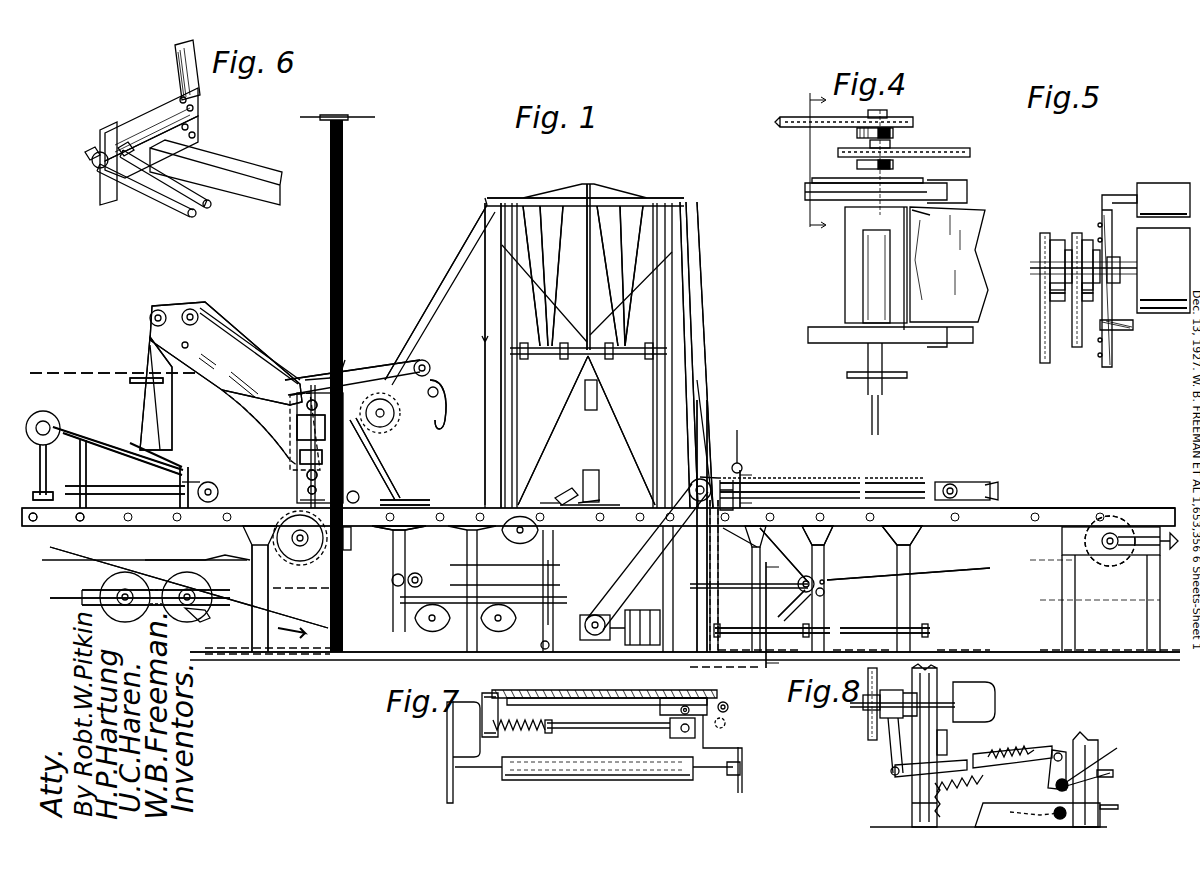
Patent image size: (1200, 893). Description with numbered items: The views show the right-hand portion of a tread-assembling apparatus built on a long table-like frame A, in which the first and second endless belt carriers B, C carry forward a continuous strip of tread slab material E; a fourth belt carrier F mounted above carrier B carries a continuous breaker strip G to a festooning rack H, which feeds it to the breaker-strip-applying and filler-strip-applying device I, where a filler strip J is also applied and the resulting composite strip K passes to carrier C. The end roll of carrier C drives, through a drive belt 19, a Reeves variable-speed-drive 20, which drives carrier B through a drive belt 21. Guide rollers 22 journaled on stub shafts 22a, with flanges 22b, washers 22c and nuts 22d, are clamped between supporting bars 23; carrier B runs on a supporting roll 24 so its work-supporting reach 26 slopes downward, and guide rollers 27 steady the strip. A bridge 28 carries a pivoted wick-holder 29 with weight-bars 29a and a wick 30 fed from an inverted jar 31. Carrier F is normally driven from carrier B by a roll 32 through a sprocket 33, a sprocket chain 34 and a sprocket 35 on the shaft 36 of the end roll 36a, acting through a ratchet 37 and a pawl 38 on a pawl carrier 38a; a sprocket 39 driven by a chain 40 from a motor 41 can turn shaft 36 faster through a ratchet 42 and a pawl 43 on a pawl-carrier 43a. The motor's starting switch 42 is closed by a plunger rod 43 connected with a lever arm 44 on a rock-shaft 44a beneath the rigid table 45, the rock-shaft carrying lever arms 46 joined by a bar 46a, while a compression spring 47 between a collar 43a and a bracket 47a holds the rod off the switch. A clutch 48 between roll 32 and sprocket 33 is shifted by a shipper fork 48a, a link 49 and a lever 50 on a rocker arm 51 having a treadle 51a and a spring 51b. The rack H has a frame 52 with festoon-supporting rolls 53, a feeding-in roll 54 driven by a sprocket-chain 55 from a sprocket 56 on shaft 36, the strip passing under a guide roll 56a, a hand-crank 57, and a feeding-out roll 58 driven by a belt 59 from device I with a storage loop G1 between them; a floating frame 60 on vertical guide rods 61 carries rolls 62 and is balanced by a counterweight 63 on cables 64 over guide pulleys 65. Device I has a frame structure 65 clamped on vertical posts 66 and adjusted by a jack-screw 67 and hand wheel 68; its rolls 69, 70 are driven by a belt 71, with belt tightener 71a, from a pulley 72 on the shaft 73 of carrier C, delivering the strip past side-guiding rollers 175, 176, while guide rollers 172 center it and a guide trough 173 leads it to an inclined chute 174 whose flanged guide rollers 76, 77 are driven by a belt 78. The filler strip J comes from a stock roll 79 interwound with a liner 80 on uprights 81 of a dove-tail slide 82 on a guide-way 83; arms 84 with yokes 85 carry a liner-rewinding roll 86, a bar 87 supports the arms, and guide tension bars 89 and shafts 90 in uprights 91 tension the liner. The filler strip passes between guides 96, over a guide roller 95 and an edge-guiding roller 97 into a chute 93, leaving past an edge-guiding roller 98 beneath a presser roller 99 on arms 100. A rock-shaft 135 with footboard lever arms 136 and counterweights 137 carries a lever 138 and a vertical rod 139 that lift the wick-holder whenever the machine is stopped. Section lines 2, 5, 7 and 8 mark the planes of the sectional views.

In FIG. 1, the section line 2 is at (194, 380).
In FIG. 4, the section line 5 is at (812, 158).
In FIG. 1, the section line 7 is at (742, 482).
In FIG. 1, the section line 8 is at (761, 623).
In FIG. 1, the drive belt 19 is at (52, 600).
In FIG. 1, the Reeves variable-speed-drive 20 is at (205, 618).
In FIG. 1, the drive belt 21 is at (298, 594).
In FIG. 1, the guide rollers 22 is at (420, 498).
In FIG. 6, the guide rollers 22 is at (165, 207).
In FIG. 6, the stub shafts 22a is at (210, 208).
In FIG. 6, the flanges 22b is at (133, 146).
In FIG. 6, the washers 22c is at (96, 167).
In FIG. 6, the nuts 22d is at (88, 158).
In FIG. 6, the supporting bars 23 is at (198, 123).
In FIG. 1, the supporting roll 24 is at (520, 552).
In FIG. 1, the work-supporting reach 26 is at (440, 600).
In FIG. 1, the guide rollers 27 is at (418, 577).
In FIG. 1, the bridge 28 is at (598, 503).
In FIG. 1, the wick-holder 29 is at (592, 498).
In FIG. 1, the weight-bars 29a is at (562, 490).
In FIG. 1, the wick 30 is at (548, 500).
In FIG. 1, the inverted jar 31 is at (590, 470).
In FIG. 1, the roll 32 is at (800, 598).
In FIG. 8, the roll 32 is at (982, 697).
In FIG. 1, the sprocket 33 is at (800, 577).
In FIG. 8, the sprocket 33 is at (867, 712).
In FIG. 1, the sprocket chain 34 is at (803, 560).
In FIG. 4, the sprocket chain 34 is at (965, 150).
In FIG. 5, the sprocket chain 34 is at (1075, 348).
In FIG. 8, the sprocket chain 34 is at (868, 690).
In FIG. 4, the sprocket 35 is at (905, 157).
In FIG. 5, the sprocket 35 is at (1087, 300).
In FIG. 1, the shaft 36 is at (718, 478).
In FIG. 4, the shaft 36 is at (845, 196).
In FIG. 5, the shaft 36 is at (1126, 285).
In FIG. 4, the end roll 36a is at (908, 330).
In FIG. 5, the end roll 36a is at (1165, 315).
In FIG. 4, the ratchet 37 is at (892, 165).
In FIG. 5, the ratchet 37 is at (1088, 293).
In FIG. 4, the pawl 38 is at (858, 165).
In FIG. 5, the pawl 38 is at (1087, 240).
In FIG. 5, the pawl carrier 38a is at (1097, 250).
In FIG. 4, the sprocket 39 is at (888, 113).
In FIG. 5, the sprocket 39 is at (1055, 300).
In FIG. 1, the chain 40 is at (705, 548).
In FIG. 4, the chain 40 is at (792, 118).
In FIG. 5, the chain 40 is at (1040, 355).
In FIG. 1, the motor 41 is at (647, 632).
In FIG. 1, the ratchet / starting switch 42 is at (765, 492).
In FIG. 4, the ratchet / starting switch 42 is at (890, 133).
In FIG. 5, the ratchet / starting switch 42 is at (1058, 293).
In FIG. 7, the ratchet / starting switch 42 is at (460, 728).
In FIG. 4, the pawl / plunger rod 43 is at (858, 133).
In FIG. 5, the pawl / plunger rod 43 is at (1057, 240).
In FIG. 7, the pawl / plunger rod 43 is at (600, 724).
In FIG. 5, the pawl-carrier / collar 43a is at (1068, 250).
In FIG. 7, the pawl-carrier / collar 43a is at (552, 733).
In FIG. 7, the lever arm 44 is at (695, 730).
In FIG. 7, the rock-shaft 44a is at (678, 738).
In FIG. 1, the rigid table 45 is at (930, 482).
In FIG. 4, the rigid table 45 is at (920, 278).
In FIG. 7, the rigid table 45 is at (650, 704).
In FIG. 1, the lever arms 46 is at (905, 483).
In FIG. 7, the lever arms 46 is at (730, 707).
In FIG. 1, the bar 46a is at (872, 483).
In FIG. 7, the bar 46a is at (727, 724).
In FIG. 7, the compression spring 47 is at (527, 722).
In FIG. 7, the bracket 47a is at (490, 695).
In FIG. 8, the clutch 48 is at (888, 720).
In FIG. 1, the shipper fork 48a is at (832, 546).
In FIG. 8, the shipper fork 48a is at (890, 770).
In FIG. 8, the link 49 is at (980, 760).
In FIG. 8, the lever 50 is at (1050, 772).
In FIG. 1, the rocker arm 51 is at (878, 616).
In FIG. 8, the rocker arm 51 is at (1105, 758).
In FIG. 1, the treadle 51a is at (748, 628).
In FIG. 8, the treadle 51a is at (1112, 777).
In FIG. 8, the spring 51b is at (1012, 748).
In FIG. 1, the frame 52 is at (498, 455).
In FIG. 1, the festoon-supporting rolls 53 is at (680, 198).
In FIG. 1, the feeding-in roll 54 is at (690, 198).
In FIG. 1, the sprocket-chain 55 is at (712, 386).
In FIG. 1, the sprocket 56 is at (688, 484).
In FIG. 4, the sprocket 56 is at (858, 380).
In FIG. 1, the guide roll 56a is at (745, 452).
In FIG. 4, the guide roll 56a is at (875, 253).
In FIG. 5, the guide roll 56a is at (1160, 195).
In FIG. 1, the hand-crank 57 is at (722, 560).
In FIG. 4, the hand-crank 57 is at (884, 395).
In FIG. 1, the feeding-out roll 58 is at (487, 199).
In FIG. 1, the belt 59 is at (443, 280).
In FIG. 1, the floating frame 60 is at (604, 395).
In FIG. 1, the vertical guide rods 61 is at (665, 422).
In FIG. 1, the rolls 62 is at (586, 364).
In FIG. 1, the counterweight 63 is at (588, 410).
In FIG. 1, the cables 64 is at (640, 206).
In FIG. 1, the guide pulleys / frame structure 65 is at (288, 378).
In FIG. 1, the vertical posts 66 is at (344, 225).
In FIG. 1, the jack-screw 67 is at (300, 470).
In FIG. 1, the hand wheel 68 is at (303, 484).
In FIG. 1, the stock-supporting and driving roll 69 is at (395, 410).
In FIG. 1, the stock-supporting and driving roll 70 is at (292, 422).
In FIG. 1, the belt 71 is at (405, 460).
In FIG. 1, the belt tightener 71a is at (388, 530).
In FIG. 1, the pulley 72 is at (347, 548).
In FIG. 1, the shaft 73 is at (297, 550).
In FIG. 1, the flanged guide roller 76 is at (422, 360).
In FIG. 1, the flanged guide rollers 77 is at (445, 390).
In FIG. 1, the belt 78 is at (438, 392).
In FIG. 1, the stock roll 79 is at (42, 411).
In FIG. 1, the liner 80 is at (60, 465).
In FIG. 1, the uprights 81 is at (44, 462).
In FIG. 1, the dove-tail slide 82 is at (37, 492).
In FIG. 1, the transverse guide-way 83 is at (58, 524).
In FIG. 1, the arms 84 is at (165, 487).
In FIG. 1, the yoke 85 is at (202, 488).
In FIG. 1, the liner-rewinding roll 86 is at (218, 488).
In FIG. 1, the bar 87 is at (86, 472).
In FIG. 1, the guide tension bars 89 is at (190, 475).
In FIG. 1, the shafts 90 is at (84, 452).
In FIG. 1, the uprights 91 is at (96, 524).
In FIG. 1, the filler-strip-guiding chute 93 is at (232, 340).
In FIG. 1, the guide roller 95 is at (160, 310).
In FIG. 1, the guides 96 is at (140, 384).
In FIG. 1, the flanged edge-guiding roller 97 is at (196, 308).
In FIG. 1, the flanged edge-guiding roller 98 is at (308, 380).
In FIG. 1, the presser roller 99 is at (296, 392).
In FIG. 1, the arms 100 is at (312, 400).
In FIG. 8, the rock-shaft 135 is at (1057, 809).
In FIG. 1, the lever arms 136 is at (1112, 660).
In FIG. 8, the lever arms 136 is at (1110, 810).
In FIG. 8, the counterweight 137 is at (1006, 814).
In FIG. 1, the lever 138 is at (548, 648).
In FIG. 1, the vertical rod 139 is at (550, 578).
In FIG. 1, the guide rollers 172 is at (395, 434).
In FIG. 1, the guide trough 173 is at (350, 385).
In FIG. 1, the chute 174 is at (360, 372).
In FIG. 1, the side-guiding roller 175 is at (305, 462).
In FIG. 1, the side-guiding roller 176 is at (305, 502).
In FIG. 1, the frame A is at (1048, 522).
In FIG. 4, the frame A is at (833, 340).
In FIG. 5, the frame A is at (1112, 367).
In FIG. 1, the endless belt carrier B is at (965, 578).
In FIG. 1, the endless belt carrier C is at (180, 560).
In FIG. 1, the tread slab strip E is at (400, 478).
In FIG. 1, the endless belt carrier F is at (885, 528).
In FIG. 4, the endless belt carrier F is at (850, 288).
In FIG. 7, the endless belt carrier F is at (628, 757).
In FIG. 1, the breaker strip G is at (705, 362).
In FIG. 7, the breaker strip G is at (570, 690).
In FIG. 1, the storage loop G1 is at (452, 425).
In FIG. 1, the festooning rack H is at (684, 198).
In FIG. 1, the breaker-strip-applying and filler-strip-applying device I is at (345, 378).
In FIG. 1, the filler strip J is at (146, 344).
In FIG. 1, the composite strip K is at (297, 437).